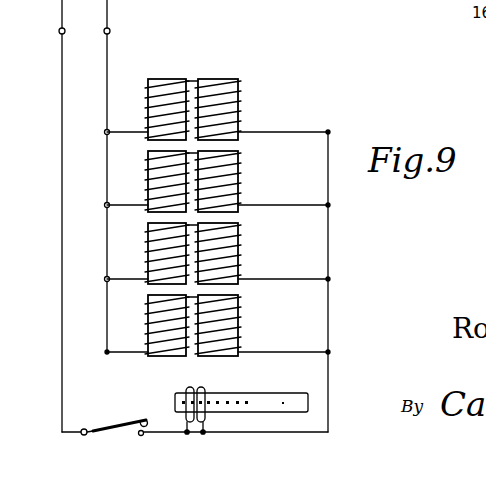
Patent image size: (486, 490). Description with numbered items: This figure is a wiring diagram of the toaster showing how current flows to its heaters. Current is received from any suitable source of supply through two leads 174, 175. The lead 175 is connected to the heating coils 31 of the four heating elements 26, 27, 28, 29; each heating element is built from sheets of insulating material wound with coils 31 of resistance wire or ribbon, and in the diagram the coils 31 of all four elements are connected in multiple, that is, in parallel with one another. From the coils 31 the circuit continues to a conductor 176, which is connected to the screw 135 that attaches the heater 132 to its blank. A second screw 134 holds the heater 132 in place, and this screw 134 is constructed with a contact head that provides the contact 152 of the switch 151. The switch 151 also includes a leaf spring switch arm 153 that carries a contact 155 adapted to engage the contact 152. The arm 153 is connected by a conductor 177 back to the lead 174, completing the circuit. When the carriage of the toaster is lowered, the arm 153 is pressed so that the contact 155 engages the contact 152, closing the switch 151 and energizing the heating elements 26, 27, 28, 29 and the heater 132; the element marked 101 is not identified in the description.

The heating element 26 is at (218, 86).
The heating element 27 is at (238, 152).
The heating element 28 is at (238, 224).
The heating element 29 is at (238, 296).
The heating coils 31 is at (172, 90).
The relay unit 101 is at (308, 402).
The heater 132 is at (204, 386).
The screw 134 is at (200, 450).
The screw 135 is at (204, 433).
The switch 151 is at (118, 427).
The contact 152 is at (142, 437).
The leaf spring switch arm 153 is at (99, 437).
The contact 155 is at (148, 422).
The lead 174 is at (60, 9).
The lead 175 is at (110, 12).
The conductor 176 is at (329, 357).
The conductor 177 is at (61, 370).